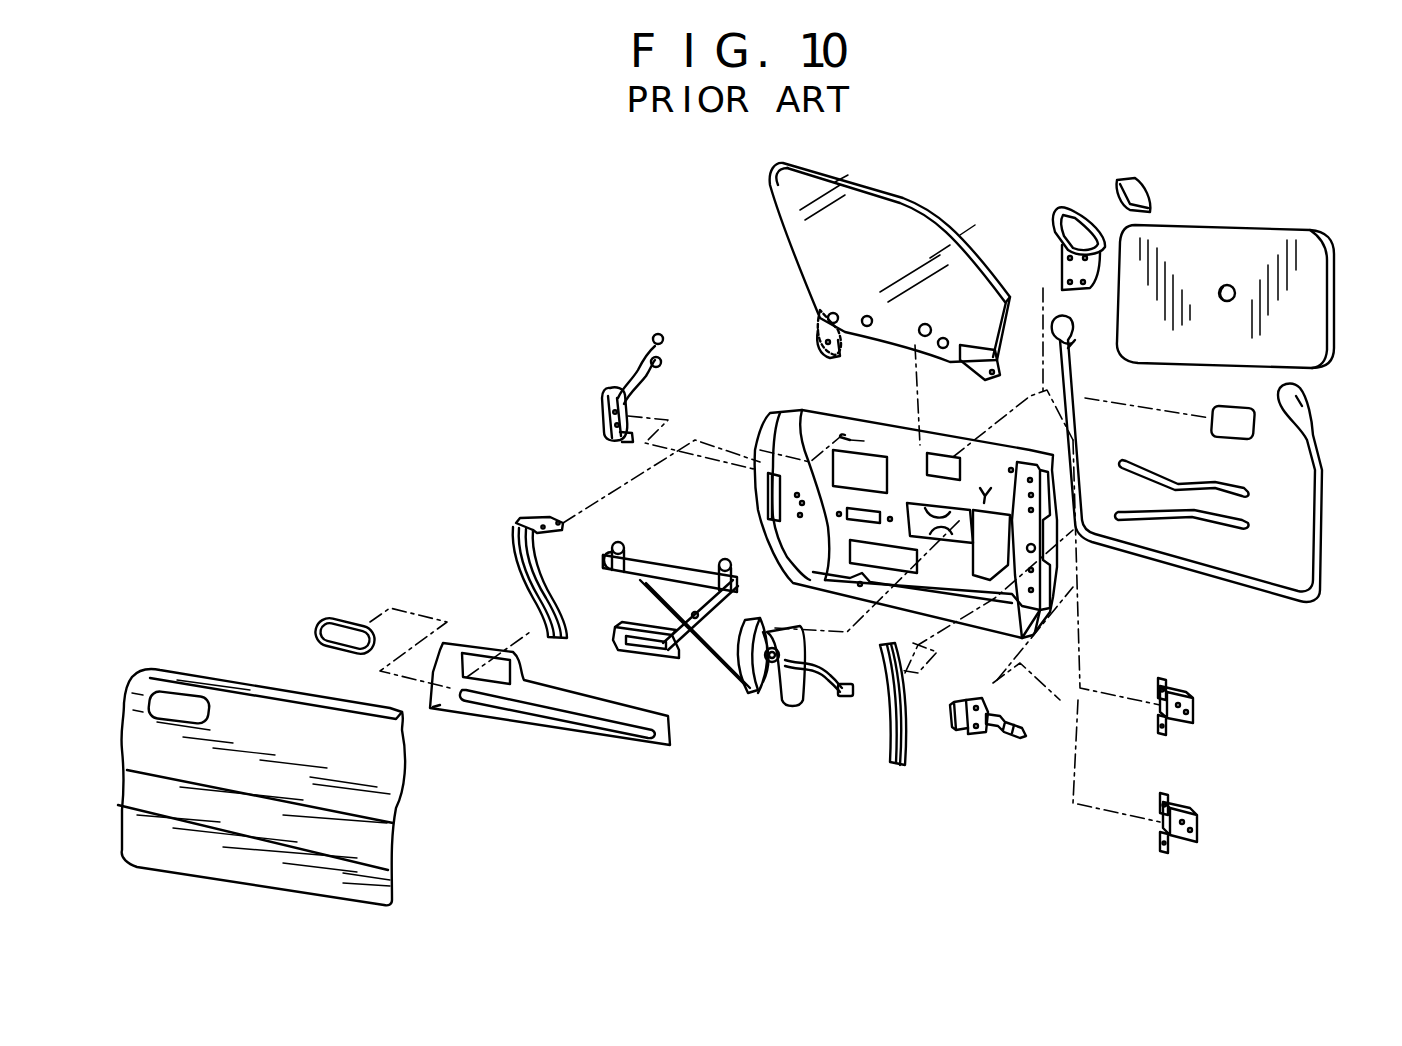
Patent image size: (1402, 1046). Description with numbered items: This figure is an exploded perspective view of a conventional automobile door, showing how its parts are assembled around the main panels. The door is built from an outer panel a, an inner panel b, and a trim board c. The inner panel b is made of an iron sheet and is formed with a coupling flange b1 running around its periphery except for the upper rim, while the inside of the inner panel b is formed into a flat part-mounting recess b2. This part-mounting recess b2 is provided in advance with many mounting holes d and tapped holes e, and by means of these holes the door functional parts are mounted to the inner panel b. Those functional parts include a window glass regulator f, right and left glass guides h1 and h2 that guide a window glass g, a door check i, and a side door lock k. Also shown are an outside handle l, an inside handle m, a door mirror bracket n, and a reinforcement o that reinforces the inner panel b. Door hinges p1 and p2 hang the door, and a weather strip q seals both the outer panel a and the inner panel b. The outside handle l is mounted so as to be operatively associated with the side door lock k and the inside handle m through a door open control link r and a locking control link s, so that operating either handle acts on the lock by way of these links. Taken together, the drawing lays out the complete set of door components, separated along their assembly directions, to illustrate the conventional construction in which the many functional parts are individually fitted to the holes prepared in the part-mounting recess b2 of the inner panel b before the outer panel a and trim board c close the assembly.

The outer panel a is at (290, 868).
The inner panel b is at (902, 520).
The coupling flange b1 is at (992, 620).
The part-mounting recess b2 is at (838, 418).
The trim board c is at (1248, 225).
The mounting holes d is at (903, 486).
The tapped holes e is at (986, 502).
The window glass regulator f is at (703, 660).
The window glass g is at (882, 205).
The glass guide h1 is at (516, 521).
The glass guide h2 is at (885, 752).
The door check i is at (970, 738).
The side door lock k is at (600, 409).
The outside handle l is at (345, 623).
The inside handle m is at (1225, 408).
The door mirror bracket n is at (1055, 215).
The reinforcement o is at (570, 730).
The door hinge p1 is at (1193, 710).
The door hinge p2 is at (1197, 826).
The weather strip q is at (1303, 596).
The door open control link r is at (1220, 478).
The locking control link s is at (1205, 518).